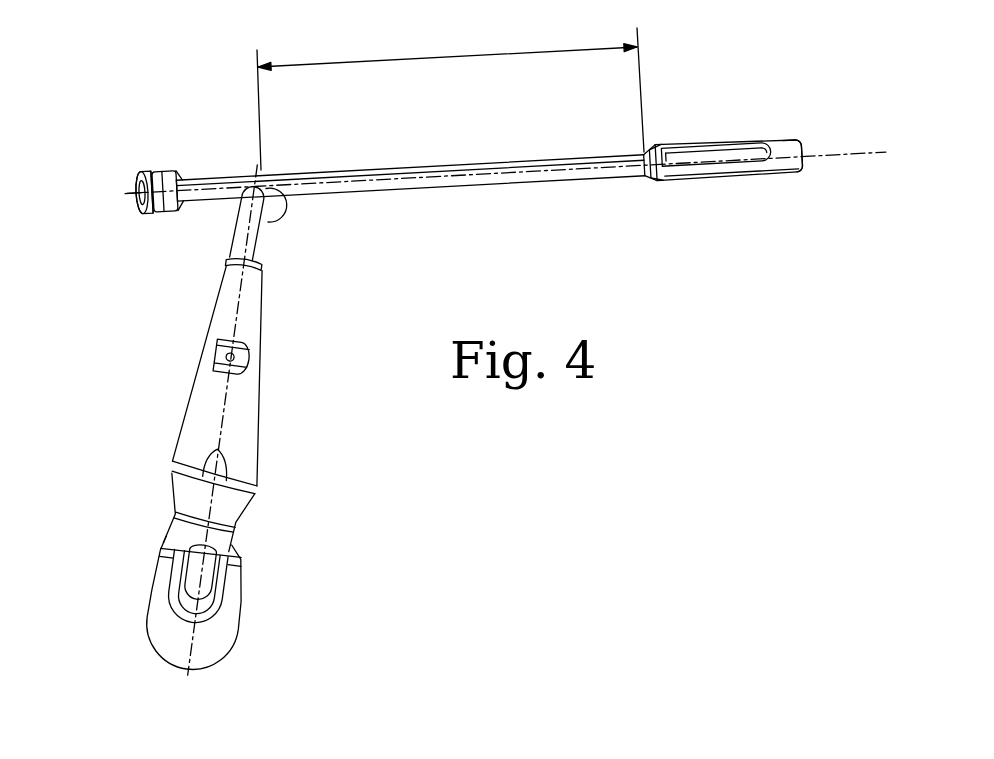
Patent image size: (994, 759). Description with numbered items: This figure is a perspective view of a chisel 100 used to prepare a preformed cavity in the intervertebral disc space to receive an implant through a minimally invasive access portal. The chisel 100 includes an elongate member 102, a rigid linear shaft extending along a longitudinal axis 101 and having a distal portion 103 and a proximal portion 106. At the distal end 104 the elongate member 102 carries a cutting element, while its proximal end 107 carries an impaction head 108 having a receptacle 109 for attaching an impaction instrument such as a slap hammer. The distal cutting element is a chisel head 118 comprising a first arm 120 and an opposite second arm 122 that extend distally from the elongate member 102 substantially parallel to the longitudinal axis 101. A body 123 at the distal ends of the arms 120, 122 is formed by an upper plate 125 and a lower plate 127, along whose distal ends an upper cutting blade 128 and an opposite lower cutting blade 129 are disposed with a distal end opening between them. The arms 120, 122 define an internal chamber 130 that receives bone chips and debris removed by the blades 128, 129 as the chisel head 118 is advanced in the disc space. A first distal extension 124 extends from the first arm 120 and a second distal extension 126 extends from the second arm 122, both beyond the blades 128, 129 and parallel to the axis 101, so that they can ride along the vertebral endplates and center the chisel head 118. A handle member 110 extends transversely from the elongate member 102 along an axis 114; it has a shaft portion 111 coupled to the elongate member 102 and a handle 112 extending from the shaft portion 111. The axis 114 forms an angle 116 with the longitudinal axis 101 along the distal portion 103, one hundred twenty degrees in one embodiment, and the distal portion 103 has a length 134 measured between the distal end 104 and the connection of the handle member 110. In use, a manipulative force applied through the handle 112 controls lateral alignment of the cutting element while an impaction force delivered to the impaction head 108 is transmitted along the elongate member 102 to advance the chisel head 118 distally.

The chisel 100 is at (366, 130).
The longitudinal axis 101 is at (472, 176).
The elongate member 102 is at (424, 195).
The distal portion 103 is at (398, 168).
The distal end 104 is at (644, 151).
The proximal portion 106 is at (202, 181).
The proximal end 107 is at (160, 170).
The impaction head 108 is at (140, 170).
The receptacle 109 is at (126, 200).
The handle member 110 is at (265, 425).
The shaft portion 111 is at (262, 247).
The handle 112 is at (258, 473).
The axis 114 is at (238, 318).
The angle 116 is at (284, 220).
The chisel head 118 is at (687, 190).
The first arm 120 is at (702, 140).
The second arm 122 is at (707, 181).
The body 123 is at (771, 146).
The first distal extension 124 is at (804, 143).
The upper plate 125 is at (790, 143).
The second distal extension 126 is at (806, 166).
The lower plate 127 is at (748, 146).
The upper cutting blade 128 is at (805, 147).
The lower cutting blade 129 is at (801, 183).
The internal chamber 130 is at (722, 150).
The length 134 is at (450, 99).